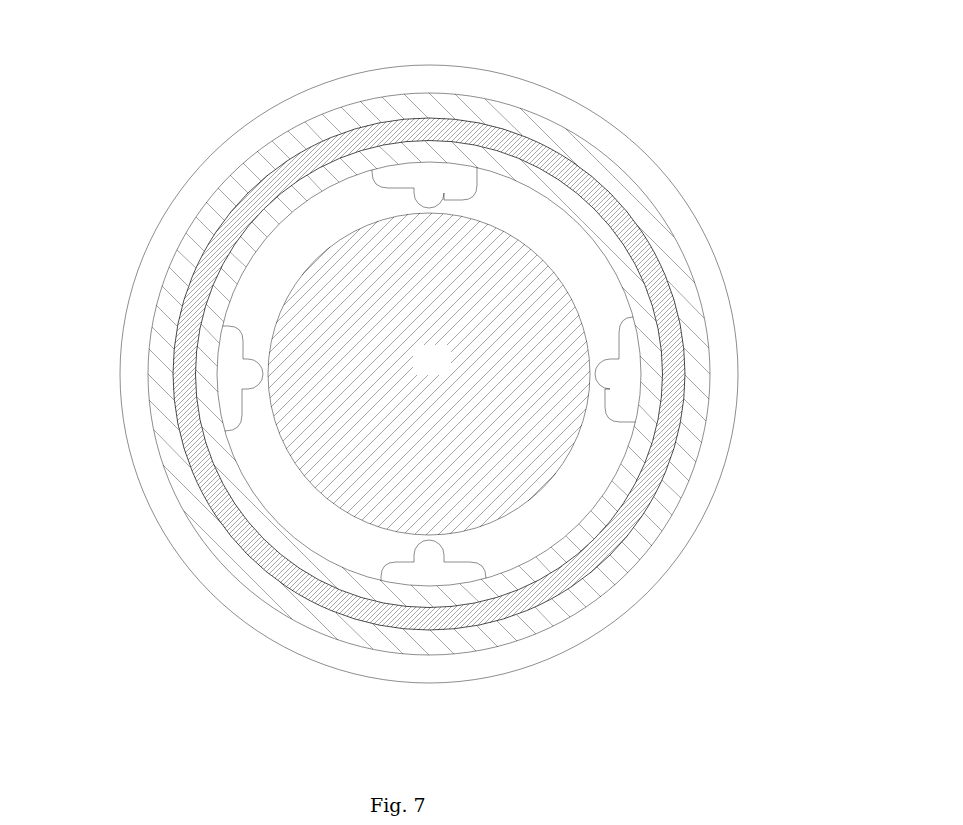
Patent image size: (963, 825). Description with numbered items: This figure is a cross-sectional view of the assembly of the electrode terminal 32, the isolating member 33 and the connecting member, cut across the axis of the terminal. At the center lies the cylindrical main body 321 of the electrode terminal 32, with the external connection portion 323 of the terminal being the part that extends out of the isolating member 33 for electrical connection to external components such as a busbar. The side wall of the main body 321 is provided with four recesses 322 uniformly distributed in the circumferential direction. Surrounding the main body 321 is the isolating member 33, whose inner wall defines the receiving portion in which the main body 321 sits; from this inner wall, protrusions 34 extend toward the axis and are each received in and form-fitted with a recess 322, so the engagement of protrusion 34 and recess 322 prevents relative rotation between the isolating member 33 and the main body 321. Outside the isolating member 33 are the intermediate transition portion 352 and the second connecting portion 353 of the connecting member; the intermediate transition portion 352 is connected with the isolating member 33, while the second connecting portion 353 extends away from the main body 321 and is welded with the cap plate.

The electrode terminal 32 is at (446, 372).
The main body 321 is at (293, 243).
The recess 322 is at (470, 118).
The external connection portion 323 is at (493, 267).
The isolating member 33 is at (320, 612).
The protrusion 34 is at (367, 160).
The intermediate transition portion 352 is at (277, 577).
The second connecting portion 353 is at (187, 552).